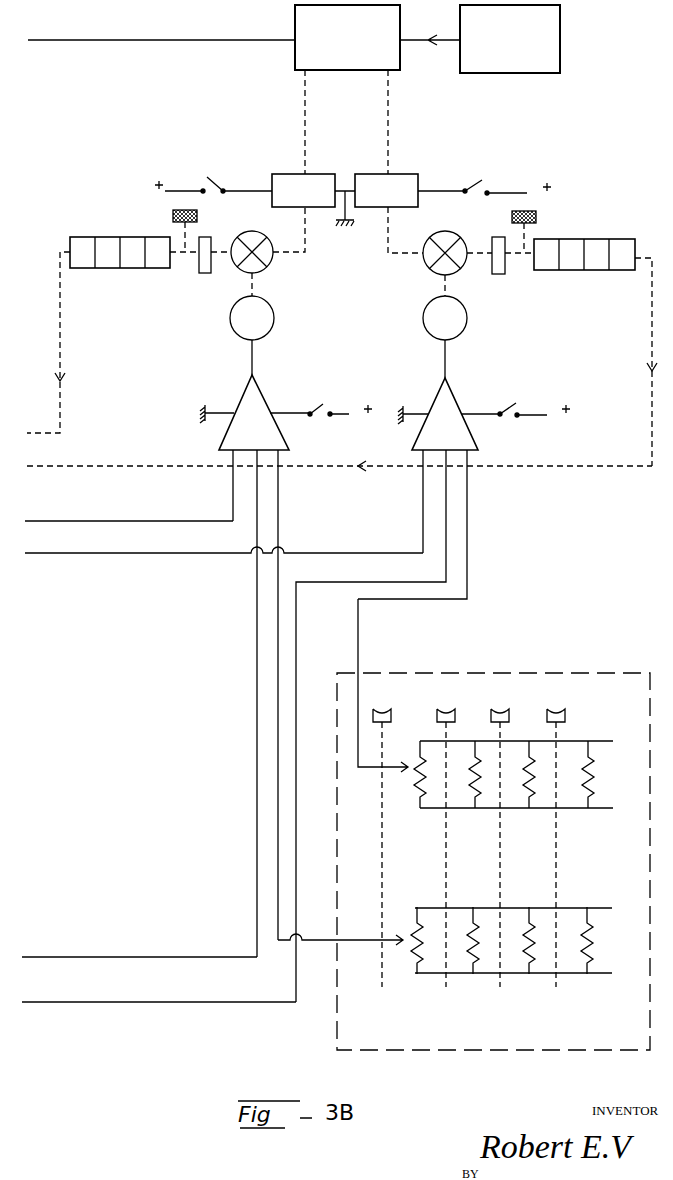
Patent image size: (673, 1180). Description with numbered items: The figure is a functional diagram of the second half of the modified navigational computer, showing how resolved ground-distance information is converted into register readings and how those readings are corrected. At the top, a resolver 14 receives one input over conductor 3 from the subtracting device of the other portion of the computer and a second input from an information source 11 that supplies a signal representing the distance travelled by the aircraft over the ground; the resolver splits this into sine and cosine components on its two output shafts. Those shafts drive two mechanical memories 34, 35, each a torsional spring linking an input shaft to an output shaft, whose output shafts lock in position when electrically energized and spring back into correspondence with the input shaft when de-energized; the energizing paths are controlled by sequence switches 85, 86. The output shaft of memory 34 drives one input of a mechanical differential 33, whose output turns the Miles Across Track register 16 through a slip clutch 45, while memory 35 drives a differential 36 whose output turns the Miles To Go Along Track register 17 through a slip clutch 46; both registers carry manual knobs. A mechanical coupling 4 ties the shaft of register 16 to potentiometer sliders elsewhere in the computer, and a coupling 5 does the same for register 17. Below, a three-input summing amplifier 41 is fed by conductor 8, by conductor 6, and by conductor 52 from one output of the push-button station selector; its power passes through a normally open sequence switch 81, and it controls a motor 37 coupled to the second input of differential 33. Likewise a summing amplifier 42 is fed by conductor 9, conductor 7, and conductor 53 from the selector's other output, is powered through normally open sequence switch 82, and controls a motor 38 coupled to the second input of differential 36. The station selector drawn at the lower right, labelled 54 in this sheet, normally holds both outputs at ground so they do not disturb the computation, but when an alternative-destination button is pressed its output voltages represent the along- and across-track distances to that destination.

The conductor 3 is at (81, 35).
The resolver 14 is at (295, 24).
The information source 11 is at (560, 27).
The mechanical memory 34 is at (293, 174).
The mechanical memory 35 is at (403, 174).
The sequence switch 85 is at (207, 177).
The sequence switch 86 is at (484, 181).
The register 16 is at (123, 237).
The register 17 is at (609, 239).
The slip clutch 45 is at (205, 273).
The slip clutch 46 is at (499, 237).
The mechanical differential 33 is at (263, 234).
The mechanical differential 36 is at (461, 217).
The motor 37 is at (274, 318).
The motor 38 is at (423, 318).
The summing amplifier 41 is at (262, 394).
The summing amplifier 42 is at (452, 394).
The sequence switch 81 is at (323, 408).
The sequence switch 82 is at (511, 408).
The mechanical coupling 4 is at (45, 432).
The coupling 5 is at (45, 466).
The conductor 6 is at (45, 521).
The conductor 7 is at (45, 552).
The conductor 8 is at (45, 957).
The conductor 9 is at (45, 1002).
The conductor 52 is at (330, 940).
The conductor 53 is at (358, 640).
The resistor network 54 is at (497, 1033).